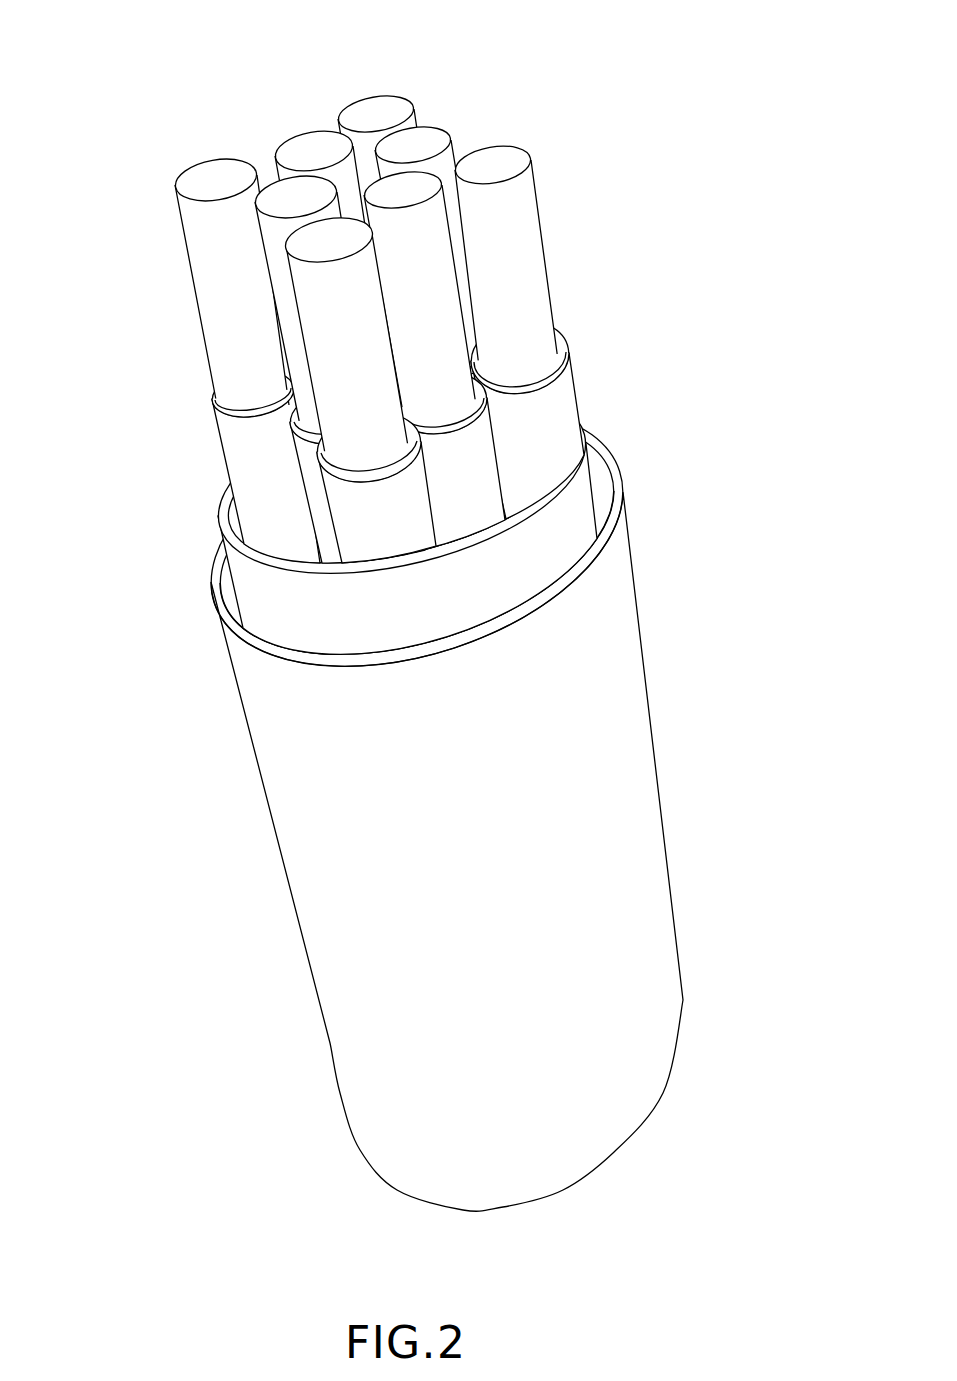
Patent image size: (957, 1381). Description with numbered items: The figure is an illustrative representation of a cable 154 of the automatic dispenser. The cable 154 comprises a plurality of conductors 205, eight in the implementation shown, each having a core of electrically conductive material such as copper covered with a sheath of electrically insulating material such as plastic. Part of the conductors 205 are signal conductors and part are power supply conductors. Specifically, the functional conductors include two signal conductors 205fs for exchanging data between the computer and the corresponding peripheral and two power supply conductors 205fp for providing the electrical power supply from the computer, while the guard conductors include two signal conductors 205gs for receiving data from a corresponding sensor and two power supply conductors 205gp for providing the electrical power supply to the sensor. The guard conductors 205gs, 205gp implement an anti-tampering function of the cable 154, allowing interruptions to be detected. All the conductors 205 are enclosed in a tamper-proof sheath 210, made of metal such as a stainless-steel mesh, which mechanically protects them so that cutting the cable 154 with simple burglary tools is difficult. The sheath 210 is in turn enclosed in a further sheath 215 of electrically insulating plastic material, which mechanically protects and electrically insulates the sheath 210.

The cable 154 is at (413, 611).
The conductors 205 is at (228, 60).
The guard power supply conductors 205gp is at (367, 302).
The guard signal conductors 205gs is at (367, 348).
The functional power supply conductors 205fp is at (367, 331).
The functional signal conductors 205fs is at (367, 324).
The tamper-proof sheath 210 is at (432, 610).
The sheath of electrically insulating material 215 is at (293, 838).